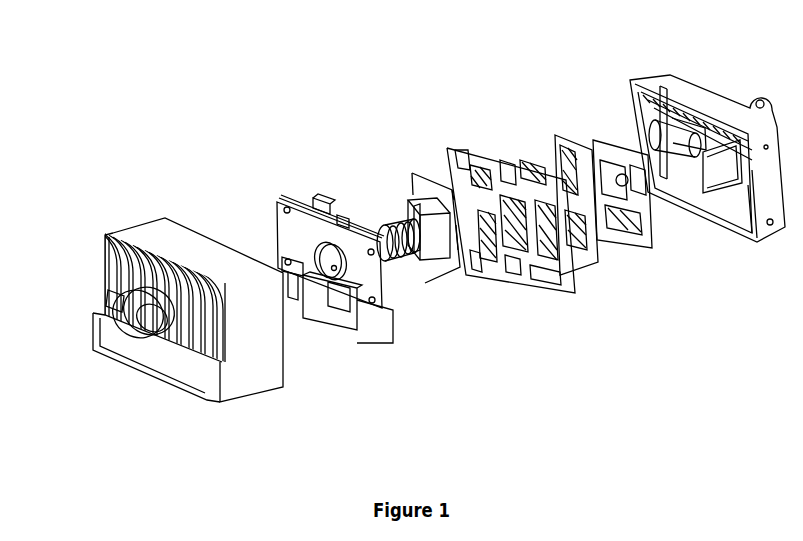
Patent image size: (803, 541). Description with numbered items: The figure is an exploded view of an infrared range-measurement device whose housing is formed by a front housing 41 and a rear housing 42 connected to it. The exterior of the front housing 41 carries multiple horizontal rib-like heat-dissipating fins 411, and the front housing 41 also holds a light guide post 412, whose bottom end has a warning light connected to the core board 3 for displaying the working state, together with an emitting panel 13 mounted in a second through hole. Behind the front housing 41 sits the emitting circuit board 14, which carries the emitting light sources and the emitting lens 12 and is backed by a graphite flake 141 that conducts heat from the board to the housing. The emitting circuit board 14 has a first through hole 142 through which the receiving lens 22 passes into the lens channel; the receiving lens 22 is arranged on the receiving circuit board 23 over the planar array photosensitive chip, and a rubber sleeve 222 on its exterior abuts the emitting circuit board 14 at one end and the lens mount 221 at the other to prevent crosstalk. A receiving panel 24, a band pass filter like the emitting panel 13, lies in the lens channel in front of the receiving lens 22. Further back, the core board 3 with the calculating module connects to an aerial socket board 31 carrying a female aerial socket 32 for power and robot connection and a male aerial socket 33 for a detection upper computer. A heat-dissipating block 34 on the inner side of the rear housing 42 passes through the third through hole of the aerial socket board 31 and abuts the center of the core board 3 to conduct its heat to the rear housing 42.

The core board 3 is at (486, 153).
The emitting lens 12 is at (294, 298).
The emitting panel 13 is at (93, 313).
The emitting circuit board 14 is at (275, 206).
The receiving lens 22 is at (380, 229).
The receiving circuit board 23 is at (445, 180).
The receiving panel 24 is at (117, 296).
The aerial socket board 31 is at (605, 155).
The female aerial socket 32 is at (648, 180).
The male aerial socket 33 is at (664, 117).
The heat-dissipating block 34 is at (695, 170).
The front housing 41 is at (245, 398).
The rear housing 42 is at (713, 90).
The graphite flake 141 is at (300, 196).
The first through hole 142 is at (332, 292).
The lens mount 221 is at (422, 258).
The rubber sleeve 222 is at (427, 262).
The heat-dissipating fin 411 is at (105, 233).
The light guide post 412 is at (180, 347).